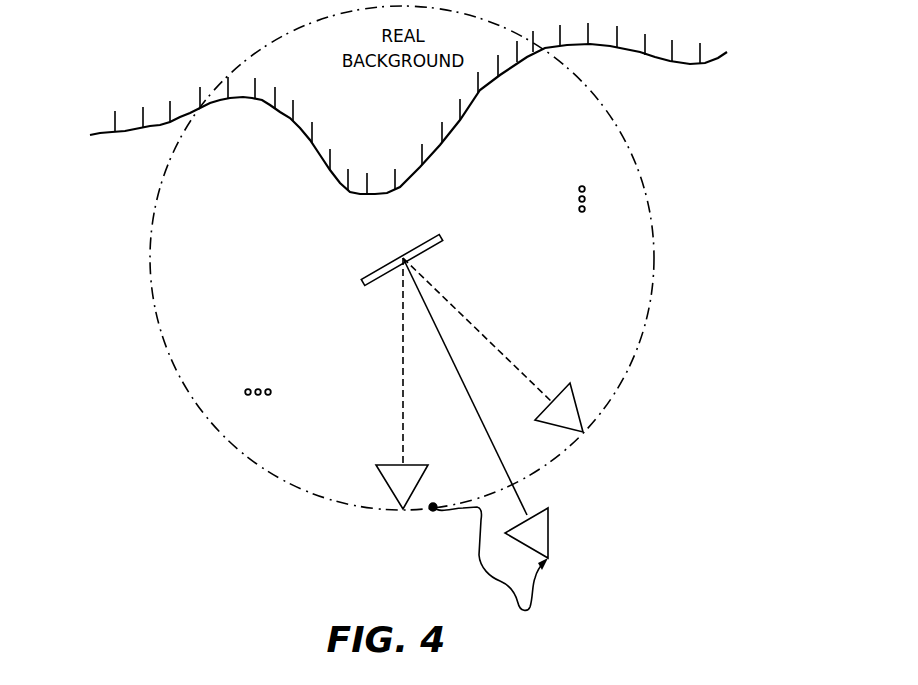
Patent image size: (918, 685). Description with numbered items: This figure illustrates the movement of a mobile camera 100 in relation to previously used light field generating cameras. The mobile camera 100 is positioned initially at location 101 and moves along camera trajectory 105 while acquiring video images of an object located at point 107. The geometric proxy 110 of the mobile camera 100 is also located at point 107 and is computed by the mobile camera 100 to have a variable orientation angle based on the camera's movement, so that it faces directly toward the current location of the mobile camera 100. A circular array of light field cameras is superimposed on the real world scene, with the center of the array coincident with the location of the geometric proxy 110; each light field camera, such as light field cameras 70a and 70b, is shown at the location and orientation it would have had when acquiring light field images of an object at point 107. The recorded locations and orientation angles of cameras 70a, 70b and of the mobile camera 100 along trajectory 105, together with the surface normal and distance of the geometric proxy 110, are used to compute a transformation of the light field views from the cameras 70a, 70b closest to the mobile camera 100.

The point 107 is at (396, 251).
The geometric proxy 110 is at (440, 236).
The light field camera 70a is at (538, 412).
The light field camera 70b is at (392, 464).
The location 101 is at (433, 511).
The mobile camera 100 is at (550, 538).
The camera trajectory 105 is at (535, 595).